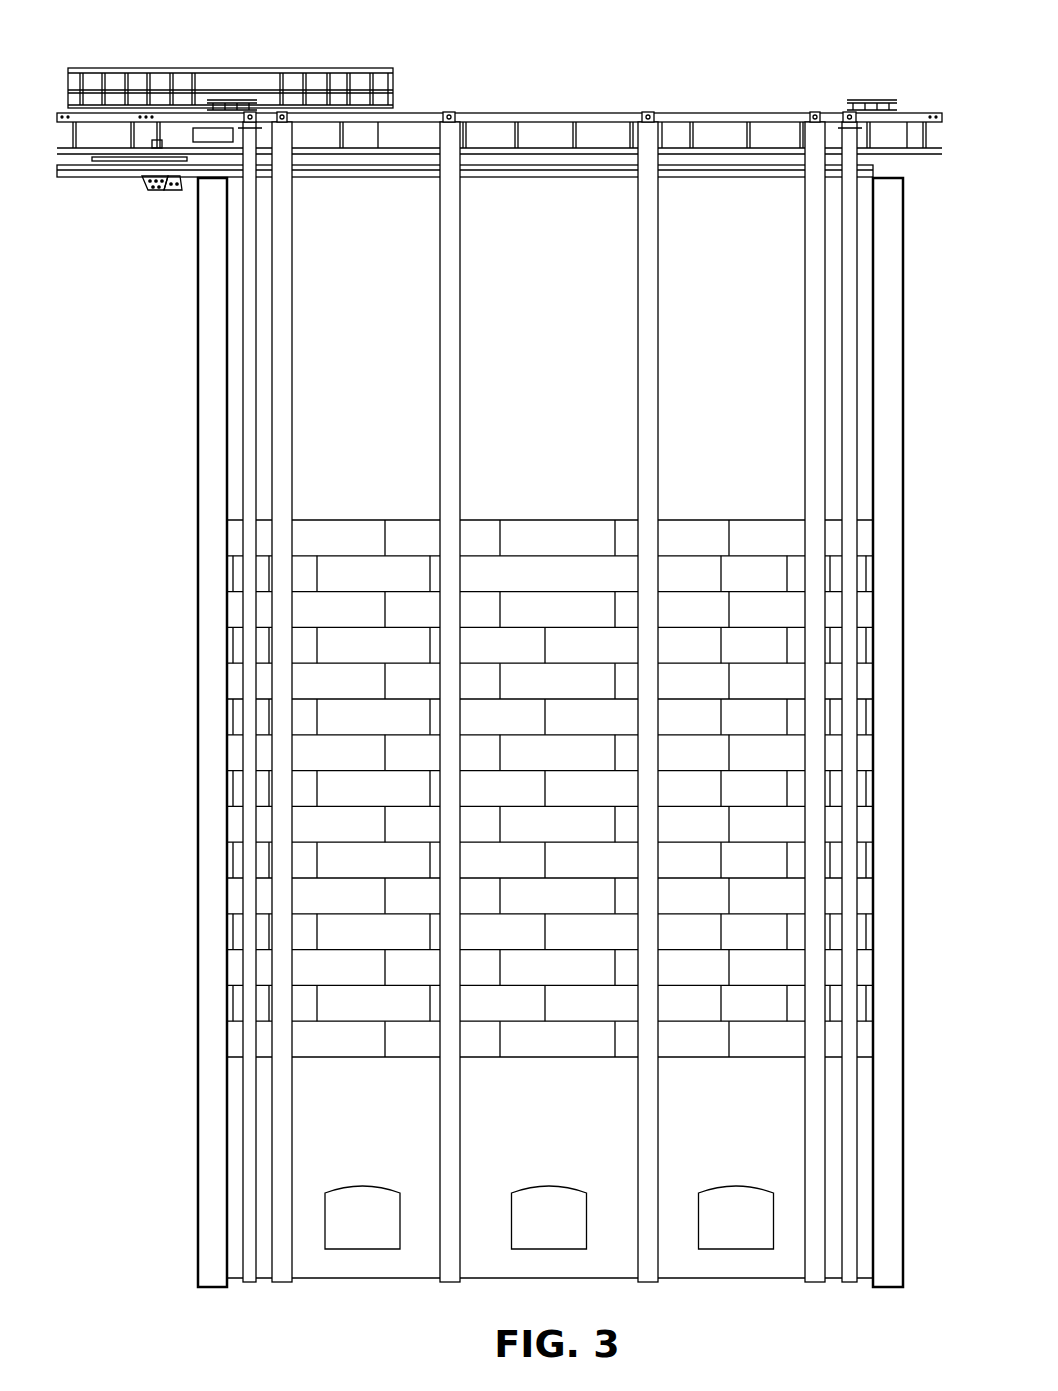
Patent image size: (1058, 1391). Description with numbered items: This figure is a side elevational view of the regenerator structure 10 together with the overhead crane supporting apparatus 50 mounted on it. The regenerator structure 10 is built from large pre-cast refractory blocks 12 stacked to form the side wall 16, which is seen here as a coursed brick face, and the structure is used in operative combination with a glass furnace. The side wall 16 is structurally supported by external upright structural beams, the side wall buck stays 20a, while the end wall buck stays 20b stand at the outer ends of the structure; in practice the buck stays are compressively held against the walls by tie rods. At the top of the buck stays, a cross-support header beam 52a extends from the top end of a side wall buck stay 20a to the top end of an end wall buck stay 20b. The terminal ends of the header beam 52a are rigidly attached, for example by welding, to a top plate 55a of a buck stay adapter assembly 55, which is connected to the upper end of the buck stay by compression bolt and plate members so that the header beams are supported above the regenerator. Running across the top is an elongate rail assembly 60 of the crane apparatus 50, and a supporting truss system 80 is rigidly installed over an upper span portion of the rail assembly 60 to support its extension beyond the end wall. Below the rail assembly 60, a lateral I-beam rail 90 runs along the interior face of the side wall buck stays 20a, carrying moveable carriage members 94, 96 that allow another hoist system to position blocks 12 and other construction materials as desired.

The regenerator structure 10 is at (138, 968).
The pre-cast refractory blocks 12 is at (405, 1041).
The side wall 16 is at (558, 583).
The side wall buck stays 20a is at (448, 291).
The end wall buck stays 20b is at (213, 318).
The overhead crane supporting apparatus 50 is at (70, 178).
The cross-support header beam 52a is at (232, 100).
The buck stay adapter assembly 55 is at (259, 126).
The top plate 55a is at (254, 111).
The elongate rail assembly 60 is at (582, 118).
The supporting truss system 80 is at (311, 68).
The lateral I-beam rail 90 is at (550, 173).
The moveable carriage member 94 is at (150, 189).
The moveable carriage member 96 is at (172, 191).